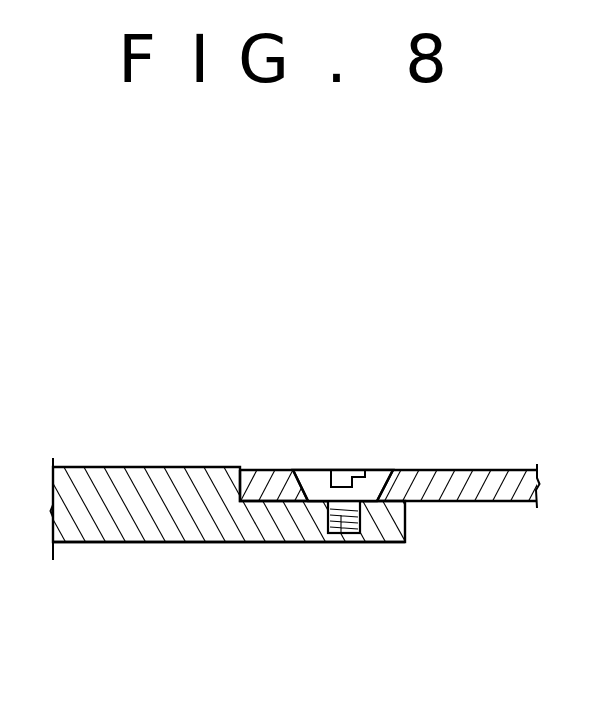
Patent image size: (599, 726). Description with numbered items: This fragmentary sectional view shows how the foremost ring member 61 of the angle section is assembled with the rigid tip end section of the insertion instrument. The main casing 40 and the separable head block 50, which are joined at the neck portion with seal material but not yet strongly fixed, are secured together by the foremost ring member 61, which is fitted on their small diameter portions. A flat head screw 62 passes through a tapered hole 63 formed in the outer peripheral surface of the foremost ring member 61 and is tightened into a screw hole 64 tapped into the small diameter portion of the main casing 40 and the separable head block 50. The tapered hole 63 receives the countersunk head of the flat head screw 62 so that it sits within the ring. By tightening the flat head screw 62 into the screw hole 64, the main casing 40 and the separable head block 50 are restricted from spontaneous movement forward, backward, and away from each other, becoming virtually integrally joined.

The main casing 40 is at (141, 523).
The separable head block 50 is at (229, 617).
The foremost ring member 61 is at (468, 478).
The flat head screw 62 is at (369, 478).
The tapered hole 63 is at (305, 468).
The screw hole 64 is at (343, 527).